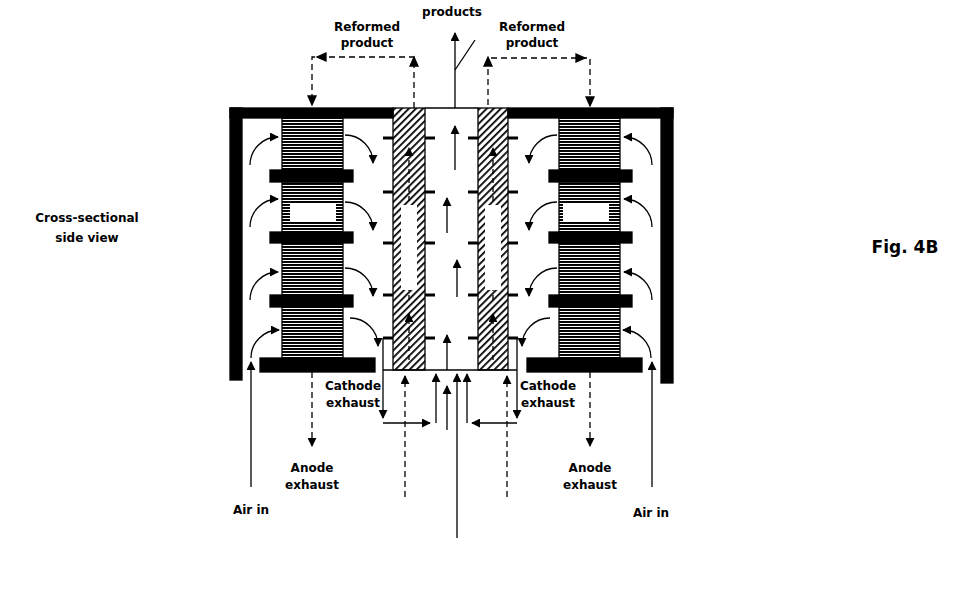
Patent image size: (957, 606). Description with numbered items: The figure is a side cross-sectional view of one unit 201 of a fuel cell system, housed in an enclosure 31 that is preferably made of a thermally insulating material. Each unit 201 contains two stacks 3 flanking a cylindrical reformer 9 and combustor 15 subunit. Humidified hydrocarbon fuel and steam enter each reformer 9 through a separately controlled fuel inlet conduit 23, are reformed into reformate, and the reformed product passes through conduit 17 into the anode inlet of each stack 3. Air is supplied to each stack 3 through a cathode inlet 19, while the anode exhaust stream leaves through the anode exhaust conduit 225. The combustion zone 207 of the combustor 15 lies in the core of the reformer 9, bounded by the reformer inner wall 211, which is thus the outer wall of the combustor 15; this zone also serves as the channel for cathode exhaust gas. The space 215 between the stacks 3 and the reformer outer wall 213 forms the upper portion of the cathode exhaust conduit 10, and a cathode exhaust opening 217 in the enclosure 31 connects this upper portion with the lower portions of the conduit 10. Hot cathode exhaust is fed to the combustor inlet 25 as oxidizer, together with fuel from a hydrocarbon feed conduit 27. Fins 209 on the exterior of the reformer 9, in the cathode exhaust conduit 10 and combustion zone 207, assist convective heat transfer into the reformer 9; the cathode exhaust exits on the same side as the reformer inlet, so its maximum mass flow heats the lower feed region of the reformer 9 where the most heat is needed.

The fuel cell stack 3 is at (446, 244).
The reformer 9 is at (403, 136).
The cathode exhaust conduit 10 is at (507, 428).
The combustor 15 is at (437, 115).
The conduit 17 is at (593, 76).
The cathode inlet 19 is at (644, 383).
The fuel inlet conduit 23 is at (450, 469).
The combustor inlet 25 is at (437, 419).
The hydrocarbon fuel feed conduit 27 is at (456, 478).
The enclosure 31 is at (673, 293).
The unit 201 is at (770, 143).
The combustion zone 207 is at (468, 189).
The fins 209 is at (471, 335).
The inner wall of the reformer 211 is at (475, 115).
The outer wall of the reformer 213 is at (509, 108).
The space 215 is at (381, 201).
The cathode exhaust opening 217 is at (536, 354).
The anode exhaust conduit 225 is at (590, 377).